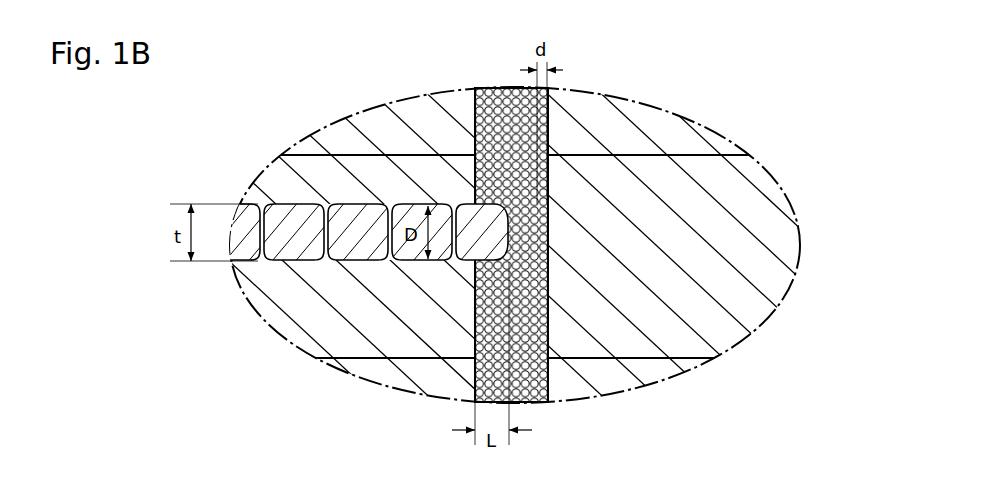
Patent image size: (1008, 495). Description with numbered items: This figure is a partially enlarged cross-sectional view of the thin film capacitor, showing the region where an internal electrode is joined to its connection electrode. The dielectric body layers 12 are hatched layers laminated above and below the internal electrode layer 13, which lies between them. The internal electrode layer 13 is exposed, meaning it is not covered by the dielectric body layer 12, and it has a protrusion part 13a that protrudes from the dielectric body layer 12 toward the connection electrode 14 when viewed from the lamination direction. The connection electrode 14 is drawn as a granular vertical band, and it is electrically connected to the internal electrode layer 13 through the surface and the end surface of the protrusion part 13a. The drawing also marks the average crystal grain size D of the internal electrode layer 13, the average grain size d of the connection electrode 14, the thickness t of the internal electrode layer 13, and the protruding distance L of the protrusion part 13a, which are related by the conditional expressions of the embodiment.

The dielectric body layer 12 is at (320, 327).
The internal electrode layer 13 is at (522, 166).
The protrusion part 13a is at (540, 214).
The connection electrode 14 is at (508, 103).